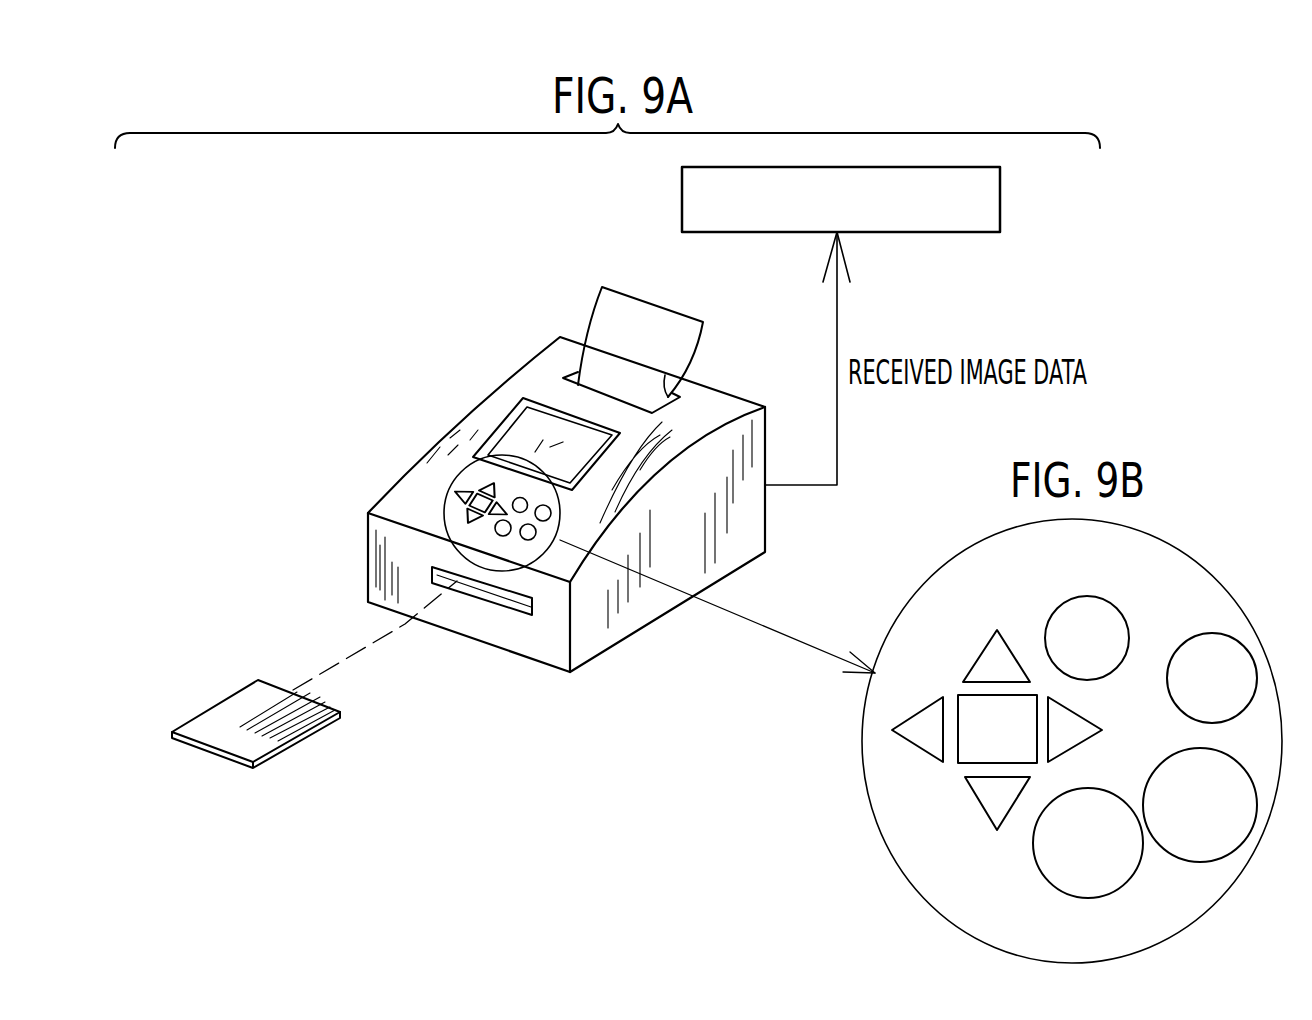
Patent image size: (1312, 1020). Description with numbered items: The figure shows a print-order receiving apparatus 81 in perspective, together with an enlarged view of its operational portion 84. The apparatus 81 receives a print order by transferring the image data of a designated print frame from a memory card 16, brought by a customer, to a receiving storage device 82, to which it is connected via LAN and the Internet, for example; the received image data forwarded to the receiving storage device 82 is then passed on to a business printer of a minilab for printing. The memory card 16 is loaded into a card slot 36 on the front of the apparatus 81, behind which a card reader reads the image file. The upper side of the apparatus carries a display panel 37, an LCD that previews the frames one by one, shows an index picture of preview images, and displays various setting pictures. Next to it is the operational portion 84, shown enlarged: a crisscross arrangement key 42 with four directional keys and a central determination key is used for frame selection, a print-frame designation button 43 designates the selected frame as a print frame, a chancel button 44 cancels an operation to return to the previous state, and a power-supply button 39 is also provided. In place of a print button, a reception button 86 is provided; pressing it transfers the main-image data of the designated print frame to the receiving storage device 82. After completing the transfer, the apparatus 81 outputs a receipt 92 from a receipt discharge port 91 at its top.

In FIG. 9A, the print-order receiving apparatus 81 is at (484, 310).
In FIG. 9A, the receiving storage device 82 is at (982, 227).
In FIG. 9A, the receipt 92 is at (592, 310).
In FIG. 9A, the receipt discharge port 91 is at (665, 376).
In FIG. 9A, the display panel 37 is at (477, 423).
In FIG. 9A, the operational portion 84 is at (432, 489).
In FIG. 9A, the card slot 36 is at (503, 608).
In FIG. 9A, the memory card 16 is at (238, 712).
In FIG. 9B, the crisscross arrangement key 42 is at (922, 765).
In FIG. 9B, the chancel button 44 is at (1097, 605).
In FIG. 9B, the power-supply button 39 is at (1190, 648).
In FIG. 9B, the print-frame designation button 43 is at (1102, 802).
In FIG. 9B, the reception button 86 is at (1193, 765).